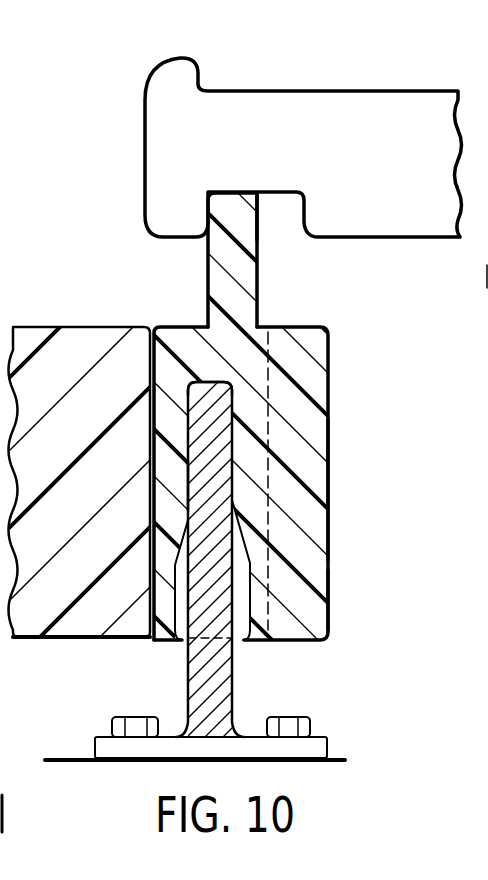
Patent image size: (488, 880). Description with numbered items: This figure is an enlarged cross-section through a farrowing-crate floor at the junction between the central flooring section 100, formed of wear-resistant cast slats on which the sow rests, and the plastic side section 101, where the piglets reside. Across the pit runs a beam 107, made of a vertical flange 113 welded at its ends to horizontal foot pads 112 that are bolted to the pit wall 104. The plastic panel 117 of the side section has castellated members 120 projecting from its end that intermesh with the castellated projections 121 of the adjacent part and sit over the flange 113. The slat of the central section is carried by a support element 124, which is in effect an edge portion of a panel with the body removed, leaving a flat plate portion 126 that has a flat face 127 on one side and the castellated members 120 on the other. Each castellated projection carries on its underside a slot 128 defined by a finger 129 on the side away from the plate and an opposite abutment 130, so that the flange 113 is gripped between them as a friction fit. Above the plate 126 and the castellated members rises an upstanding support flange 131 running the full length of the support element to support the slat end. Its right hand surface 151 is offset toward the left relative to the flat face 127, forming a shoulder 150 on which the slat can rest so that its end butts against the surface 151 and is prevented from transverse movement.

The central flooring section 100 is at (330, 80).
The side section 101 is at (100, 462).
The wall 104 is at (350, 760).
The beam 107 is at (247, 700).
The horizontal foot pad 112 is at (326, 737).
The vertical flange 113 is at (234, 672).
The panel 117 is at (77, 316).
The castellated member 120 is at (270, 458).
The castellated projection 121 is at (283, 441).
The support element 124 is at (340, 536).
The flat plate portion 126 is at (396, 457).
The flat face 127 is at (331, 587).
The slot 128 is at (222, 403).
The finger 129 is at (210, 483).
The abutment 130 is at (227, 570).
The upstanding support flange 131 is at (233, 282).
The shoulder 150 is at (303, 326).
The right hand surface 151 is at (259, 224).